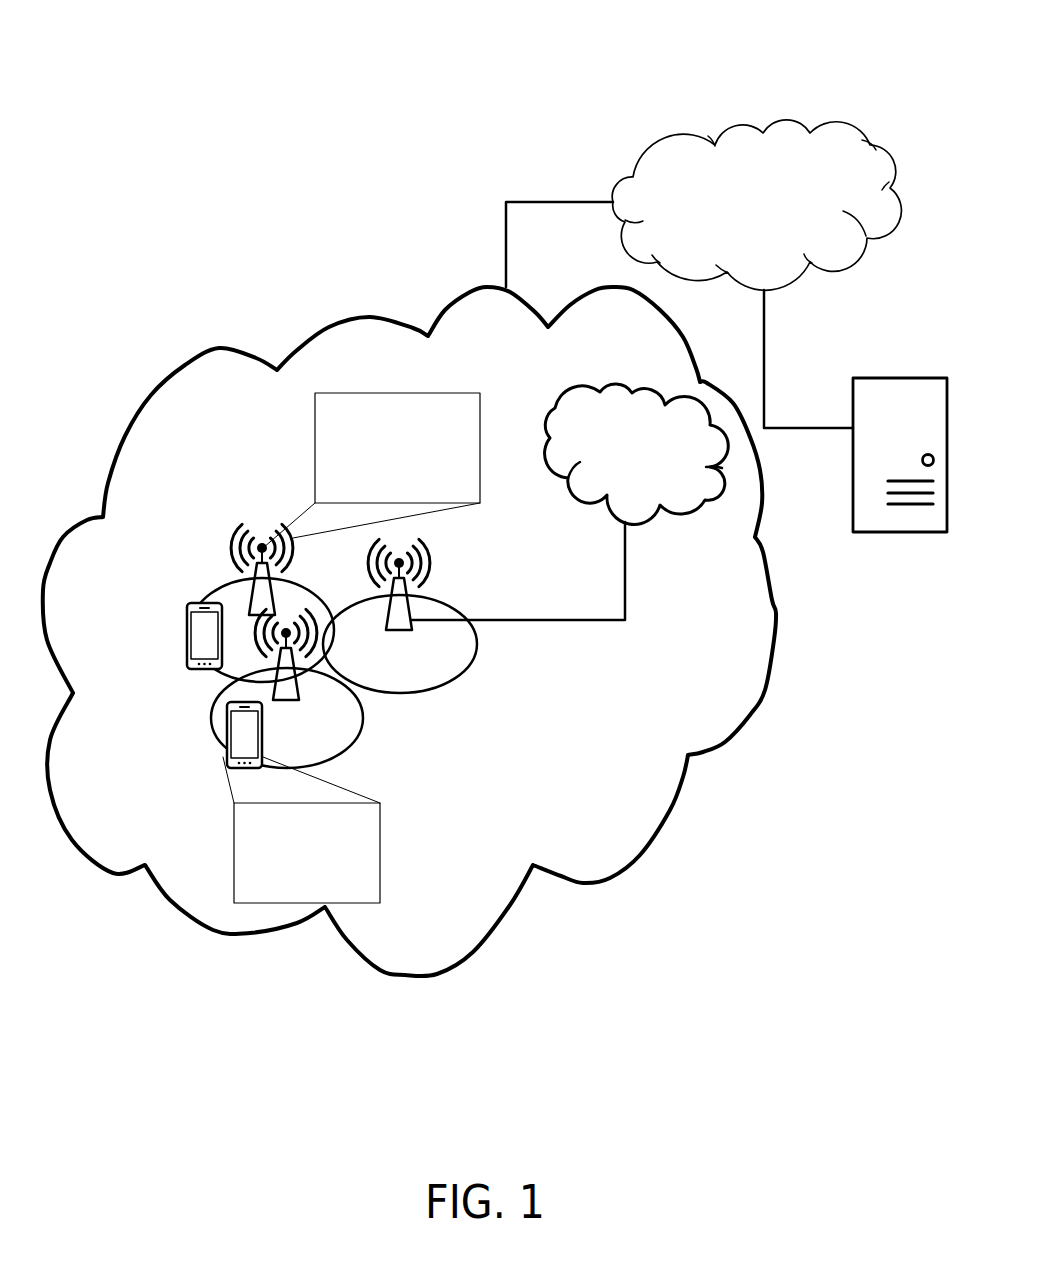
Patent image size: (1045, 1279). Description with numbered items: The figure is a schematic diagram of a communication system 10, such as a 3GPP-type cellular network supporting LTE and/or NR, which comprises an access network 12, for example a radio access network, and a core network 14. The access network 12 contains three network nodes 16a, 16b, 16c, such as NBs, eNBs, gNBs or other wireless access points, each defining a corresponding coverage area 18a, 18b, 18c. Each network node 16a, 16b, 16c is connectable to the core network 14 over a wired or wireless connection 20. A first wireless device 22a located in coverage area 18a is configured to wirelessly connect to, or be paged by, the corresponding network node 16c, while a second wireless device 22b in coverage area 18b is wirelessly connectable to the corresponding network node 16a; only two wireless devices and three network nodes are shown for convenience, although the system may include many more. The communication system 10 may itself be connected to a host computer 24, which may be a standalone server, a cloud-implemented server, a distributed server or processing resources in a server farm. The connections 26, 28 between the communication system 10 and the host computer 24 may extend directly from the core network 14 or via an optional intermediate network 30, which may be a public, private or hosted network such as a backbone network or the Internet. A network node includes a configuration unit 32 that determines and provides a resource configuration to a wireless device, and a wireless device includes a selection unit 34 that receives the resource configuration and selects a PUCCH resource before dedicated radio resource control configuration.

The communication system 10 is at (212, 38).
The access network 12 is at (488, 327).
The core network 14 is at (693, 459).
The network node 16a is at (330, 712).
The network node 16b is at (426, 564).
The network node 16c is at (233, 550).
The coverage area 18a is at (210, 593).
The coverage area 18b is at (300, 700).
The coverage area 18c is at (477, 644).
The connection 20 is at (630, 575).
The first wireless device 22a is at (187, 665).
The second wireless device 22b is at (227, 760).
The host computer 24 is at (924, 426).
The connection 26 is at (518, 201).
The connection 28 is at (808, 429).
The intermediate network 30 is at (789, 209).
The configuration unit 32 is at (439, 479).
The selection unit 34 is at (344, 887).